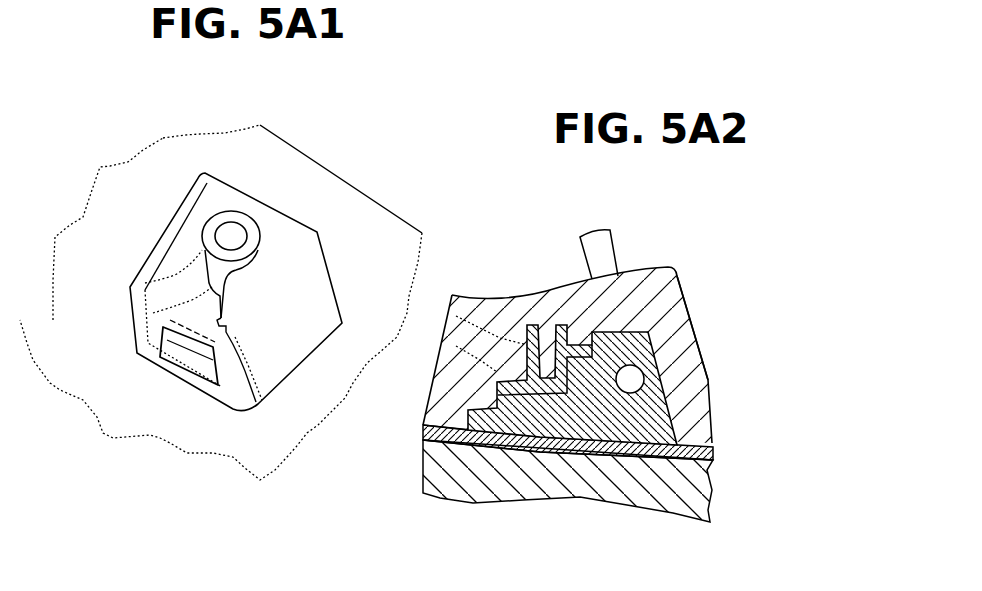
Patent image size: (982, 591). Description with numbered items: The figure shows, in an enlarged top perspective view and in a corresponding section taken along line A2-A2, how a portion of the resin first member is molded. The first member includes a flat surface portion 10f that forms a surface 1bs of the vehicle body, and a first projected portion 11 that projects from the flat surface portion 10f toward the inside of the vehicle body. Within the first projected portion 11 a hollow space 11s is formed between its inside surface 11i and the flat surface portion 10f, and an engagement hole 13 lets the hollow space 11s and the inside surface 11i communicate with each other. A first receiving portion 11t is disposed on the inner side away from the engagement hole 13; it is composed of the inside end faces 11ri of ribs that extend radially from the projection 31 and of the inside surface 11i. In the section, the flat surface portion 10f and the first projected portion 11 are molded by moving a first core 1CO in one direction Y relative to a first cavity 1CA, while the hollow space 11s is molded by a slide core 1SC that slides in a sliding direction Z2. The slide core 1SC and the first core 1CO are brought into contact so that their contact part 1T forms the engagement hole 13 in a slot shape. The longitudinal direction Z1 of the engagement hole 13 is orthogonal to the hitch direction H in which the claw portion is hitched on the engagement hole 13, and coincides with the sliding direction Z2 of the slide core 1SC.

In FIG. 5A1, the first projected portion 11 is at (222, 325).
In FIG. 5A2, the first projected portion 11 is at (498, 322).
In FIG. 5A1, the inside surface 11i is at (203, 205).
In FIG. 5A2, the inside surface 11i is at (527, 346).
In FIG. 5A1, the first receiving portion 11t is at (177, 248).
In FIG. 5A2, the first receiving portion 11t is at (482, 320).
In FIG. 5A1, the inside end faces 11ri is at (221, 355).
In FIG. 5A2, the hollow space 11s is at (538, 448).
In FIG. 5A1, the engagement hole 13 is at (193, 352).
In FIG. 5A2, the engagement hole 13 is at (470, 418).
In FIG. 5A1, the projection 31 is at (223, 210).
In FIG. 5A2, the projection 31 is at (538, 325).
In FIG. 5A2, the contact part 1T is at (498, 384).
In FIG. 5A2, the first core 1CO is at (634, 328).
In FIG. 5A2, the slide core 1SC is at (642, 328).
In FIG. 5A2, the surface of the vehicle body 1bs is at (622, 458).
In FIG. 5A2, the first cavity 1CA is at (667, 508).
In FIG. 5A2, the flat surface portion 10f is at (490, 445).
In FIG. 5A1, the section line A2- A2 is at (316, 110).
In FIG. 5A1, the hitch direction H is at (98, 455).
In FIG. 5A1, the longitudinal direction of the engagement hole Z1 is at (144, 519).
In FIG. 5A2, the sliding direction of the slide core Z2 is at (682, 398).
In FIG. 5A2, the extraction direction Y is at (540, 228).